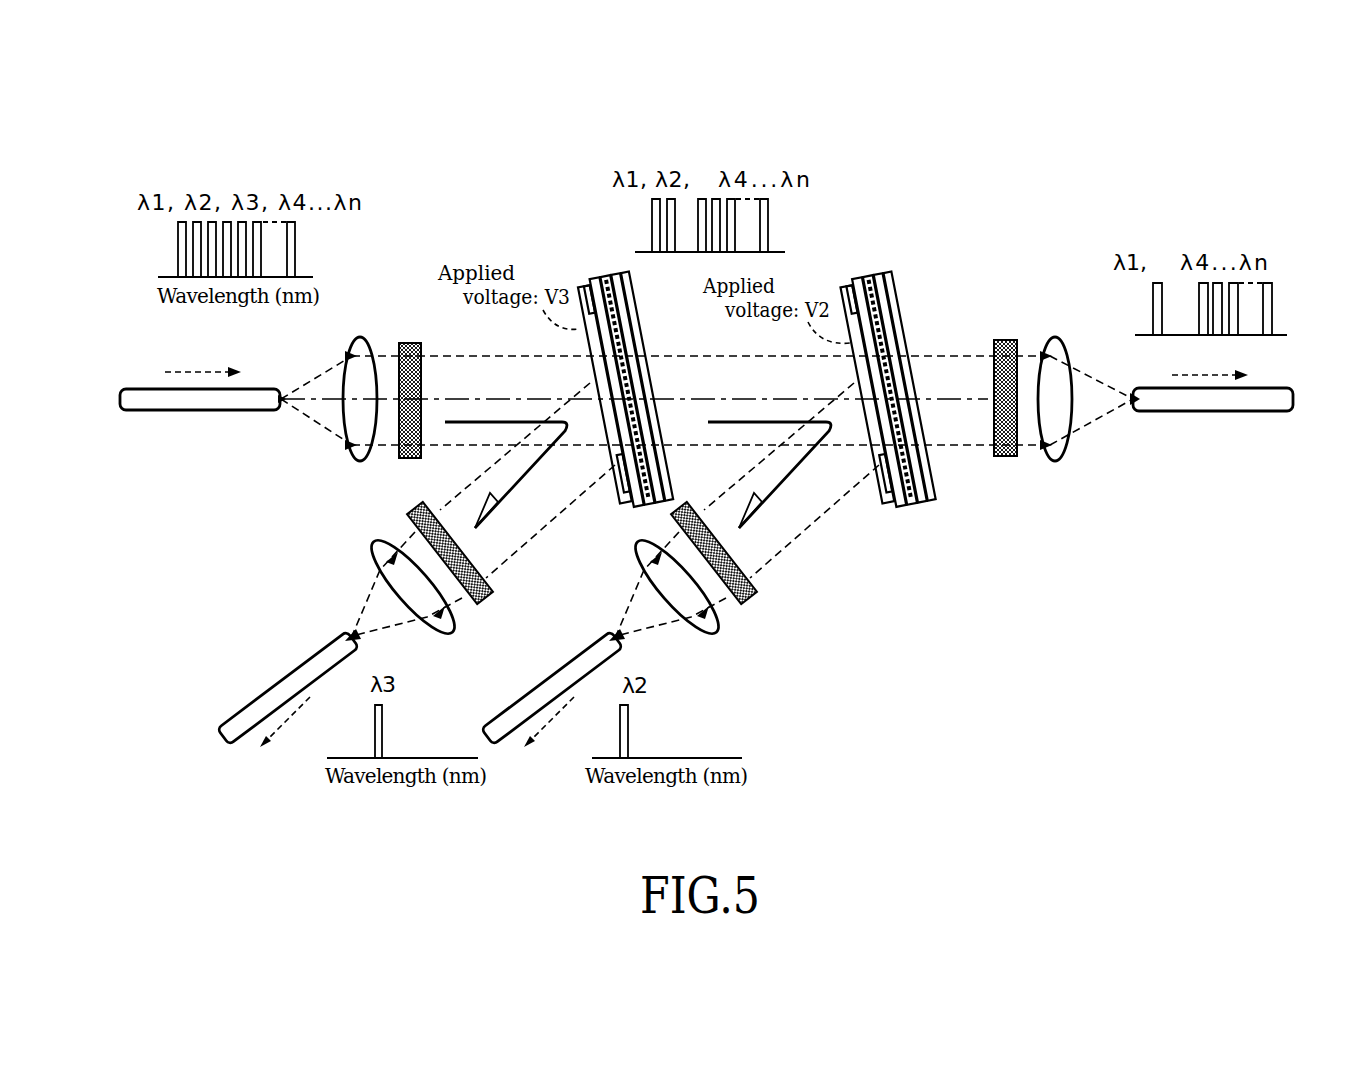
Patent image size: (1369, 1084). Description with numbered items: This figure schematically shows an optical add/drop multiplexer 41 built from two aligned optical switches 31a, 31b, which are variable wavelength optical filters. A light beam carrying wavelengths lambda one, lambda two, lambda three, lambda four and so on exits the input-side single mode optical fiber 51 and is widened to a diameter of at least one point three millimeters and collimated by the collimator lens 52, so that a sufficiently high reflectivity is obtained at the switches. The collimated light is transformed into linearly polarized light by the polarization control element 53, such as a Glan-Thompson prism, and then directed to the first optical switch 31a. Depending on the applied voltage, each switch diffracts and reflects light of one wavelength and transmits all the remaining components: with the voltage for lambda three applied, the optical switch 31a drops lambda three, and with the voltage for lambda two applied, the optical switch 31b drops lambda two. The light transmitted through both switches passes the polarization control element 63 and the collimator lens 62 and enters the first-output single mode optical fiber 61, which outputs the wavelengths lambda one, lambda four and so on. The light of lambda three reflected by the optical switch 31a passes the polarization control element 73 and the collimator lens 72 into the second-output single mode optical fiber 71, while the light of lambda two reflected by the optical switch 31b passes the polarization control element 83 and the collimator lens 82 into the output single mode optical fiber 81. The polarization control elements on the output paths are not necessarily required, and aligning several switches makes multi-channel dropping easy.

The optical add/drop multiplexer 41 is at (522, 146).
The single mode optical fiber 51 is at (205, 397).
The collimator lens 52 is at (356, 455).
The polarization control element 53 is at (409, 436).
The optical switch 31a is at (601, 270).
The optical switch 31b is at (872, 270).
The first-output single mode optical fiber 61 is at (1198, 403).
The collimator lens 62 is at (1052, 458).
The polarization control element 63 is at (1004, 448).
The second-output single mode optical fiber 71 is at (290, 683).
The collimator lens 72 is at (443, 628).
The polarization control element 73 is at (487, 590).
The output single mode optical fiber 81 is at (537, 700).
The collimator lens 82 is at (707, 628).
The polarization control element 83 is at (750, 590).